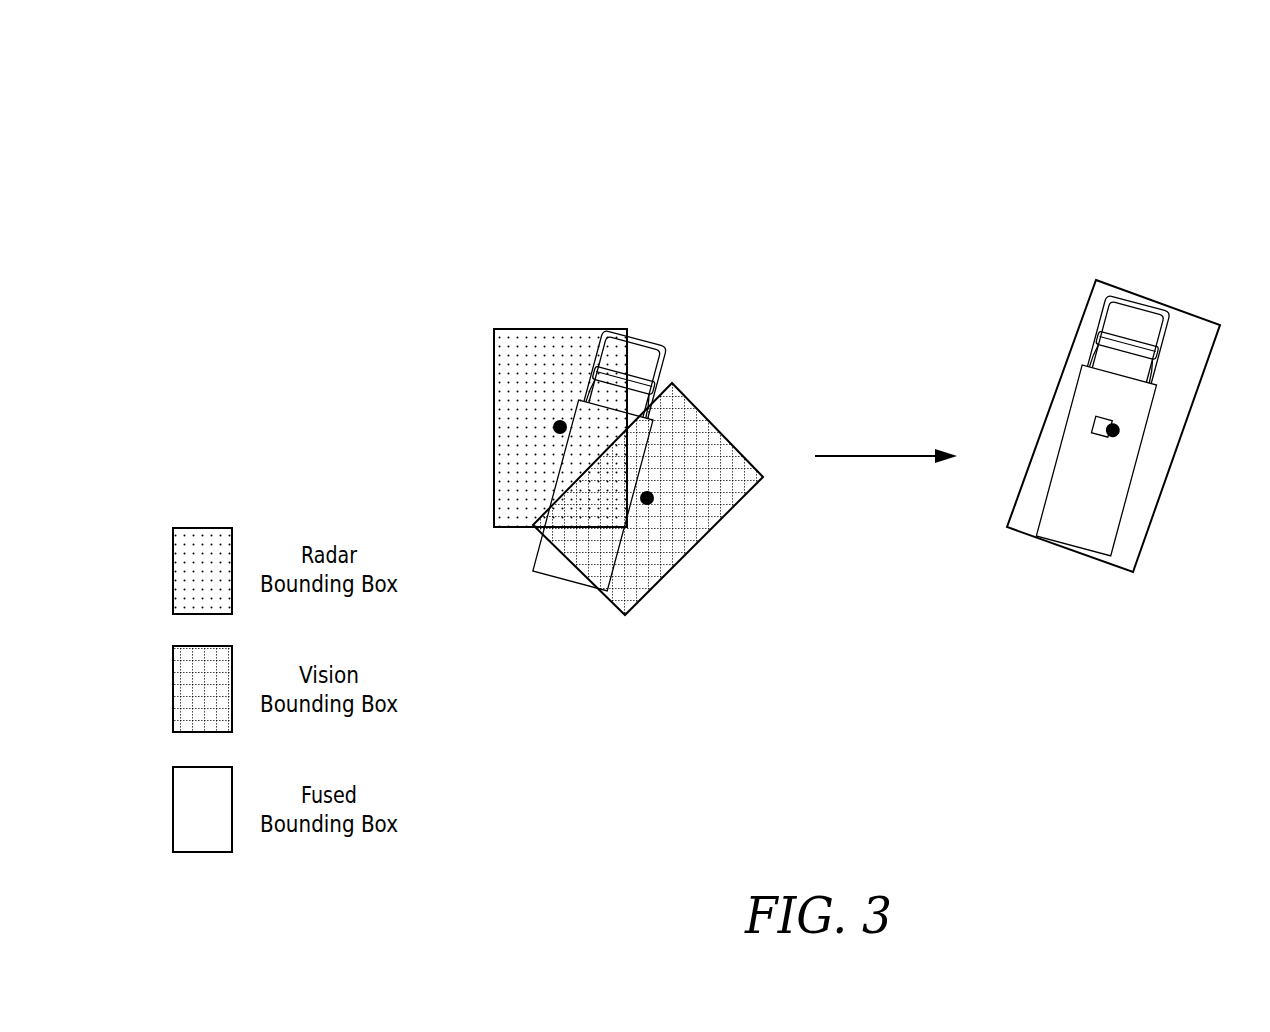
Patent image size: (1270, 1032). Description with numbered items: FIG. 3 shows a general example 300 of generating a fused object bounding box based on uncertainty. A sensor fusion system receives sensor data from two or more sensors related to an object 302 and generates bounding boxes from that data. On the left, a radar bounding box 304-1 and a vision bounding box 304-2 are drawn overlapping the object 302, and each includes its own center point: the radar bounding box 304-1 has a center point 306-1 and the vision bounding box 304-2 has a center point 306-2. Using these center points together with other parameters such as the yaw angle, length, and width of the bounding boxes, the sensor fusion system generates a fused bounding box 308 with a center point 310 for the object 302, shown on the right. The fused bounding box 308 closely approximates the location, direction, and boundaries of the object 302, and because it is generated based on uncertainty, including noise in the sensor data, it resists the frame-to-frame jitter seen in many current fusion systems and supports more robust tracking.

The general example 300 is at (216, 46).
The object 302 is at (637, 338).
The radar bounding box 304-1 is at (495, 428).
The vision bounding box 304-2 is at (693, 548).
The center point 306-1 is at (556, 431).
The center point 306-2 is at (651, 503).
The fused bounding box 308 is at (1175, 450).
The center point 310 is at (1116, 435).